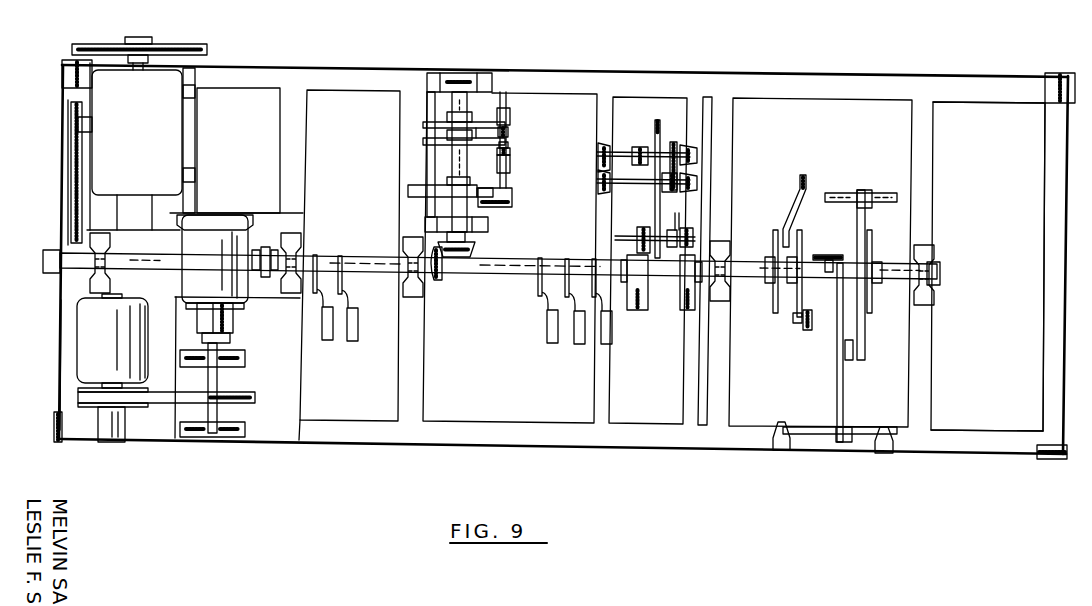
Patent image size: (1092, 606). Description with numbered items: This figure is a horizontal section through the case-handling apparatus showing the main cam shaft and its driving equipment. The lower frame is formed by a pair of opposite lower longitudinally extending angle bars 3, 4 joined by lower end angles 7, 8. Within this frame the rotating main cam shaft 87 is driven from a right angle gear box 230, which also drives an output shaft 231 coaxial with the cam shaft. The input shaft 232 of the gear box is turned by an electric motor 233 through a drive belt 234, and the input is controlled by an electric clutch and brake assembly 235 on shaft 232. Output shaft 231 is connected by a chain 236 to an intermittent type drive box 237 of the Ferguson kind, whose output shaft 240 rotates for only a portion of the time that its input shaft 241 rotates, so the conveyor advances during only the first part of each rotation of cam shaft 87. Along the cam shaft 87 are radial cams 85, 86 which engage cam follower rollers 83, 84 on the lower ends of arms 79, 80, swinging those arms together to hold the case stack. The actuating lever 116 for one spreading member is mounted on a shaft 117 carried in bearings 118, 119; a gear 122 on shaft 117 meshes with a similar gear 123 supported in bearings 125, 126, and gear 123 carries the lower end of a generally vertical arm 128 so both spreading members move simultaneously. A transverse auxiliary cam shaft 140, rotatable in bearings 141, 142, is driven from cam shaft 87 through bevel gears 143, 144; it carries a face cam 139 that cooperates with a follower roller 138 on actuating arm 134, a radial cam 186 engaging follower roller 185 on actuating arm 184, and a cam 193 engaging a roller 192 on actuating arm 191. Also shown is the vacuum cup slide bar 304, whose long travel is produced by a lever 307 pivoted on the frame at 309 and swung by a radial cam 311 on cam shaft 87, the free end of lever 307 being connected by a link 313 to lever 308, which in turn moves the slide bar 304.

The lower longitudinally extending angle bar 3 is at (973, 431).
The lower longitudinally extending angle bar 4 is at (1005, 104).
The lower end angle 7 is at (1043, 333).
The lower end angle 8 is at (59, 377).
The arm 79 is at (809, 330).
The arm 80 is at (806, 199).
The cam follower roller 83 is at (796, 324).
The cam follower roller 84 is at (773, 243).
The radial cam 85 is at (804, 246).
The radial cam 86 is at (773, 298).
The main cam shaft 87 is at (520, 275).
The actuating lever 116 is at (655, 216).
The shaft 117 is at (631, 185).
The bearing 118 is at (598, 183).
The bearing 119 is at (700, 181).
The gear 122 is at (678, 196).
The gear 123 is at (677, 140).
The bearing 125 is at (598, 152).
The bearing 126 is at (700, 156).
The arm 128 is at (640, 147).
The actuating arm 134 is at (512, 205).
The follower roller 138 is at (529, 171).
The face cam 139 is at (408, 192).
The auxiliary cam shaft 140 is at (453, 161).
The bearing 141 is at (470, 233).
The bearing 142 is at (470, 76).
The bevel gear 143 is at (457, 259).
The bevel gear 144 is at (437, 281).
The actuating arm 184 is at (511, 152).
The cam follower roller 185 is at (511, 148).
The radial cam 186 is at (476, 146).
The actuating arm 191 is at (508, 131).
The roller 192 is at (489, 108).
The cam 193 is at (436, 118).
The right angle gear box 230 is at (228, 274).
The output shaft 231 is at (145, 267).
The input shaft 232 is at (218, 378).
The electric motor 233 is at (116, 352).
The drive belt 234 is at (163, 398).
The electric clutch and brake assembly 235 is at (236, 323).
The chain 236 is at (68, 170).
The intermittent type drive box 237 is at (148, 162).
The output shaft 240 is at (132, 64).
The input shaft 241 is at (109, 115).
The slide bar 304 is at (816, 250).
The lever 307 is at (865, 332).
The lever 308 is at (843, 405).
The pivot 309 is at (883, 193).
The radial cam 311 is at (868, 237).
The link 313 is at (848, 360).